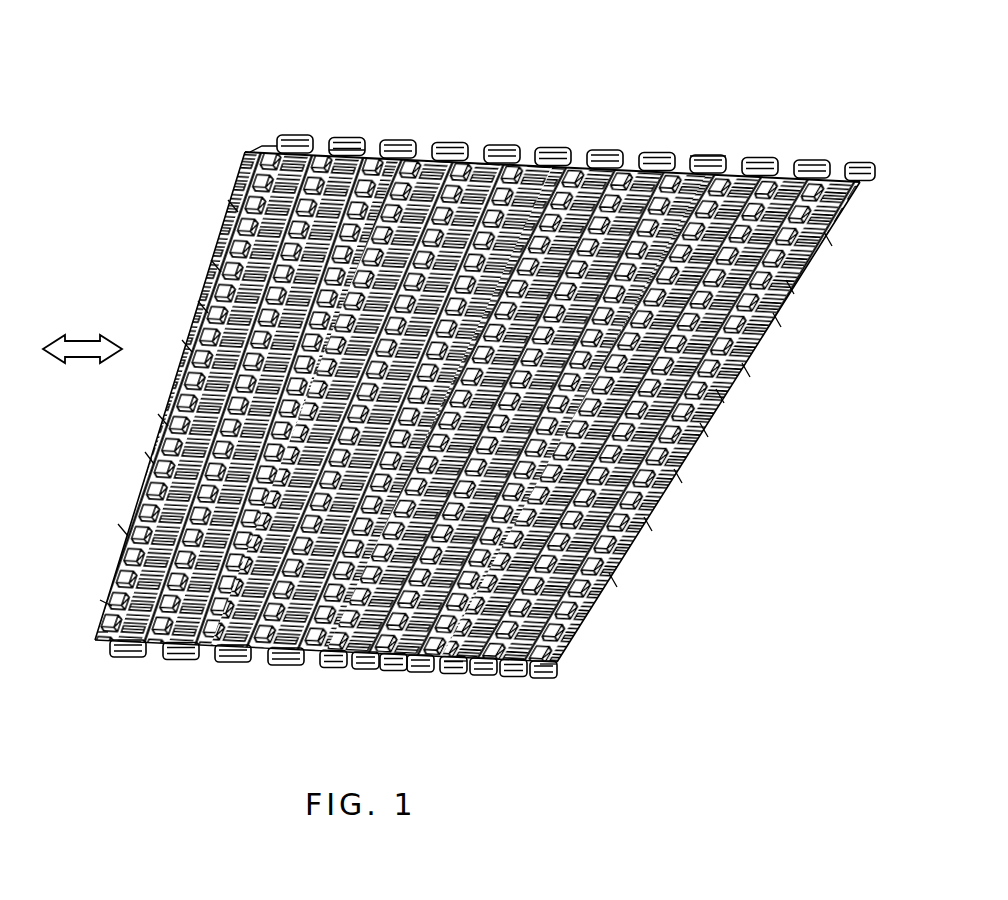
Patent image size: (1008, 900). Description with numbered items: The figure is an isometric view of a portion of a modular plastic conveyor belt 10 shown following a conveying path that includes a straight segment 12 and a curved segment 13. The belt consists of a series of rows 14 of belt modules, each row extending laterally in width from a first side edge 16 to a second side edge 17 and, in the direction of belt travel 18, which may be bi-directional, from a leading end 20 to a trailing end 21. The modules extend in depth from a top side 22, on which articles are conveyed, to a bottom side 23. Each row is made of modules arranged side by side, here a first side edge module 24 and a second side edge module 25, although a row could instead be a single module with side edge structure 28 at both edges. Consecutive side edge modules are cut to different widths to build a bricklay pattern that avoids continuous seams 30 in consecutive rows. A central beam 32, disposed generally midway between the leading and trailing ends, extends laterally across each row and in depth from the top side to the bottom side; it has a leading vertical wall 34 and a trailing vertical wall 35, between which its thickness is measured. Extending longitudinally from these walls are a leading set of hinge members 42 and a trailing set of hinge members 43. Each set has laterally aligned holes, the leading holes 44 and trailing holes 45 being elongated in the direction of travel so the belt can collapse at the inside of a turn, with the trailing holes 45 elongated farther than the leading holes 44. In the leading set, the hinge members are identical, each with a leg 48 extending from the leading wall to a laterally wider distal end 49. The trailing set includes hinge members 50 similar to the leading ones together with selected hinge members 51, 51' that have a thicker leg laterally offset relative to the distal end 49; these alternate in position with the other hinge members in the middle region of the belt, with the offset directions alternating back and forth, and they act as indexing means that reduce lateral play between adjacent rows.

The conveyor belt 10 is at (539, 36).
The straight segment 12 is at (315, 666).
The curved segment 13 is at (547, 679).
The rows of belt modules 14 is at (303, 133).
The first side edge 16 is at (455, 662).
The second side edge 17 is at (697, 154).
The direction of belt travel 18 is at (86, 340).
The leading end 20 is at (145, 459).
The trailing end 21 is at (650, 524).
The top side 22 is at (680, 476).
The bottom side 23 is at (722, 396).
The first side edge module 24 is at (262, 152).
The second side edge module 25 is at (100, 606).
The side edge structure 28 is at (556, 682).
The continuous seams 30 is at (213, 266).
The central beam 32 is at (748, 370).
The leading vertical wall 34 is at (160, 421).
The trailing vertical wall 35 is at (706, 430).
The leading set of hinge members 42 is at (615, 580).
The trailing set of hinge members 43 is at (118, 531).
The leading holes 44 is at (830, 240).
The trailing holes 45 is at (98, 638).
The leg 48 is at (791, 287).
The distal end 49 is at (779, 320).
The hinge members 50 is at (232, 206).
The selected hinge member 51 is at (180, 303).
The selected hinge member 51' is at (165, 346).